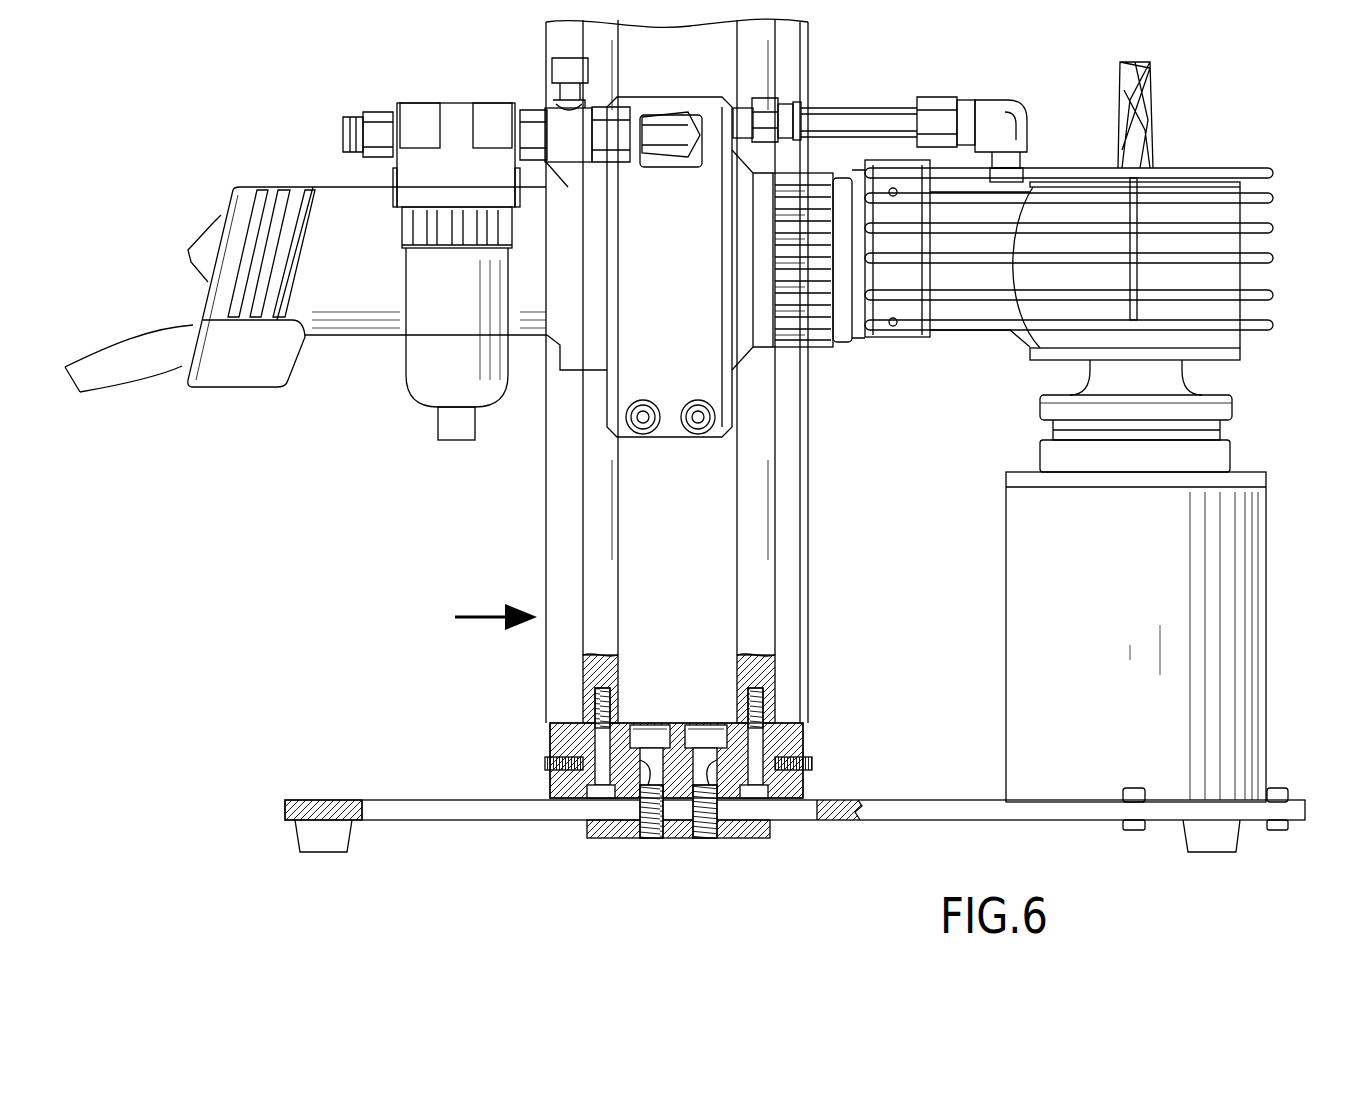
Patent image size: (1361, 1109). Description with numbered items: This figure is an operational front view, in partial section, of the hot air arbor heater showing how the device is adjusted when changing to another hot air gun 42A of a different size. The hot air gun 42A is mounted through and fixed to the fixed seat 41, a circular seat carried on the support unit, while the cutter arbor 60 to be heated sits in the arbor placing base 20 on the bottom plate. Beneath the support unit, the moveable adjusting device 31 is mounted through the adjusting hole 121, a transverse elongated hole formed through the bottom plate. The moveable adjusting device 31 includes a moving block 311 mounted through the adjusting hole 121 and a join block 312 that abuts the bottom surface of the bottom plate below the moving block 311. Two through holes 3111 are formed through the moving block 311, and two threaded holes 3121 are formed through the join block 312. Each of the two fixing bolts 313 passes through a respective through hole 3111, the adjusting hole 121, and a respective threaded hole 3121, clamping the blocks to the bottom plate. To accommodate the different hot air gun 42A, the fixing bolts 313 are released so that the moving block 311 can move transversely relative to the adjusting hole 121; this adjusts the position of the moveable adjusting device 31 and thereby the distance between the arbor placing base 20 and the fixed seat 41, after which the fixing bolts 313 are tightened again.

The hot air gun 42A is at (306, 168).
The fixed seat 41 is at (777, 355).
The cutter arbor 60 is at (1248, 434).
The arbor placing base 20 is at (1266, 584).
The moveable adjusting device 31 is at (675, 774).
The moving block 311 is at (787, 737).
The fixing bolts 313 is at (648, 733).
The adjusting hole 121 is at (815, 800).
The through holes 3111 is at (652, 763).
The join block 312 is at (677, 846).
The threaded holes 3121 is at (648, 838).